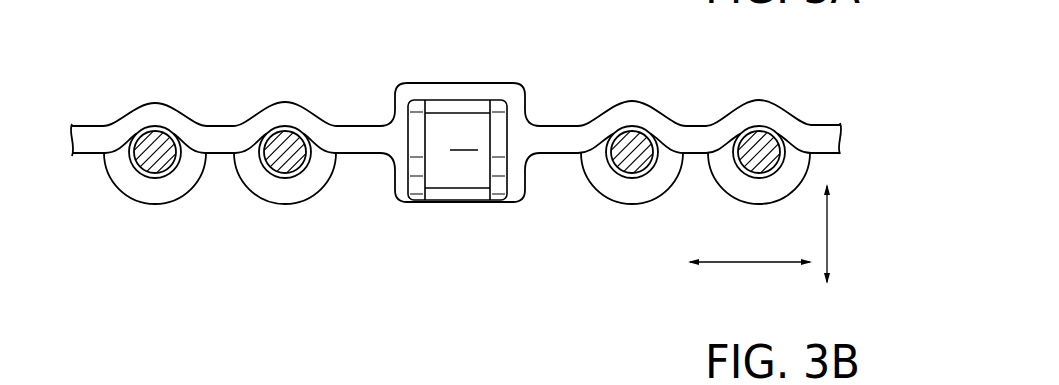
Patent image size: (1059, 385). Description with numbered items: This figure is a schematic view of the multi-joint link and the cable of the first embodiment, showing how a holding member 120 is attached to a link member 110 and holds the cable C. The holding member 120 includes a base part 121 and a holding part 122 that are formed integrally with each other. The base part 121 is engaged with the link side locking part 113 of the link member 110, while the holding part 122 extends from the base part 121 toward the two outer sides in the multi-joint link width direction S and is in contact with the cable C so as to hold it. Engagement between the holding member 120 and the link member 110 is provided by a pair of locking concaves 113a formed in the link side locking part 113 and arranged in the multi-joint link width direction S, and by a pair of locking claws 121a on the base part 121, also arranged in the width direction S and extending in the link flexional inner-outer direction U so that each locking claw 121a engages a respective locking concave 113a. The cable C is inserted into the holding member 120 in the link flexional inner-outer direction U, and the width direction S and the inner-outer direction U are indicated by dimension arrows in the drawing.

The holding member 120 is at (627, 33).
The base part 121 is at (481, 83).
The holding part 122 is at (595, 108).
The locking claws 121a is at (517, 194).
The link side locking part 113 is at (452, 246).
The locking concaves 113a is at (398, 203).
The link member 110 is at (492, 210).
The cable C is at (160, 157).
The multi-joint link width direction S is at (750, 249).
The link flexional inner-outer direction U is at (836, 234).